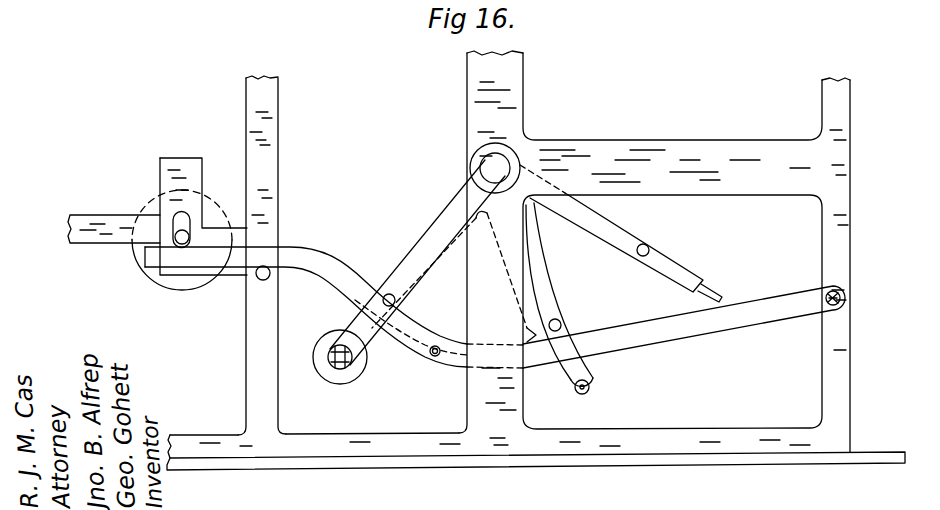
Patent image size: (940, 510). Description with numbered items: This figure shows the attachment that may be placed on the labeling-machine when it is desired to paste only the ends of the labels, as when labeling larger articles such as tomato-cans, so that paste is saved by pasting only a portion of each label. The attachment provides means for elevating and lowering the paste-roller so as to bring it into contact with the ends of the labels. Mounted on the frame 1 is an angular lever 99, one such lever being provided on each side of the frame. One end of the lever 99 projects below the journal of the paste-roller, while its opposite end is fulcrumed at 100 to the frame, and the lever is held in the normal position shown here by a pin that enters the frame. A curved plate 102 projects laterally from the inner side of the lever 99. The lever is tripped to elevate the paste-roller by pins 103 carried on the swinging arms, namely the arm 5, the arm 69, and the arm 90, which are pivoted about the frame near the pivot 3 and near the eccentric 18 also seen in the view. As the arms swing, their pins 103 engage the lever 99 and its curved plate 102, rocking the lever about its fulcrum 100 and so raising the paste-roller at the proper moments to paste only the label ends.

The frame 1 is at (500, 314).
The pivot shaft 3 is at (493, 165).
The arm 5 is at (424, 272).
The eccentric 18 is at (157, 224).
The arm 69 is at (559, 298).
The arm 90 is at (621, 233).
The angular lever 99 is at (495, 307).
The fulcrum 100 is at (826, 300).
The curved plate 102 is at (423, 324).
The pins 103 is at (392, 295).